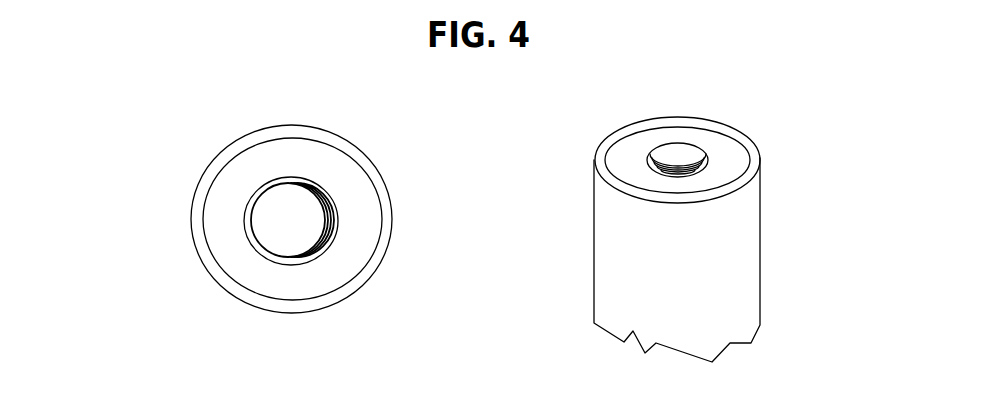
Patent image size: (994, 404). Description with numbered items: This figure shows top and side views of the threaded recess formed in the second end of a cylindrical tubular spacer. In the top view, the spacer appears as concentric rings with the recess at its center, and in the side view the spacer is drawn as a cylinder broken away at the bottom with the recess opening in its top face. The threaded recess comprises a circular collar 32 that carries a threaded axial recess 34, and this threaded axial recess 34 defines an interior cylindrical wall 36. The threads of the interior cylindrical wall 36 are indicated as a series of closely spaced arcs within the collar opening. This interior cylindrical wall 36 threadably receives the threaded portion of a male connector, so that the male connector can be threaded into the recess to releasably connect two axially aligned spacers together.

The circular collar 32 is at (328, 193).
The threaded axial recess 34 is at (333, 228).
The interior cylindrical wall 36 is at (308, 188).